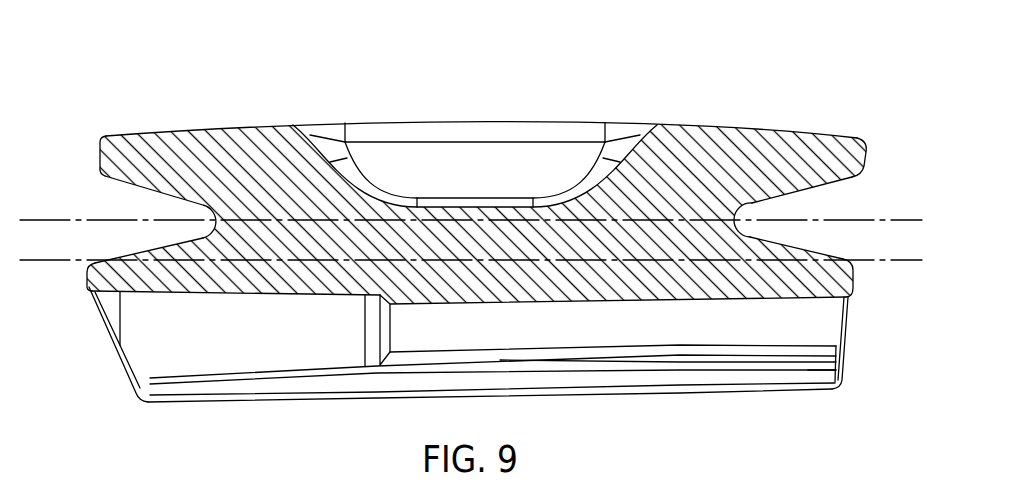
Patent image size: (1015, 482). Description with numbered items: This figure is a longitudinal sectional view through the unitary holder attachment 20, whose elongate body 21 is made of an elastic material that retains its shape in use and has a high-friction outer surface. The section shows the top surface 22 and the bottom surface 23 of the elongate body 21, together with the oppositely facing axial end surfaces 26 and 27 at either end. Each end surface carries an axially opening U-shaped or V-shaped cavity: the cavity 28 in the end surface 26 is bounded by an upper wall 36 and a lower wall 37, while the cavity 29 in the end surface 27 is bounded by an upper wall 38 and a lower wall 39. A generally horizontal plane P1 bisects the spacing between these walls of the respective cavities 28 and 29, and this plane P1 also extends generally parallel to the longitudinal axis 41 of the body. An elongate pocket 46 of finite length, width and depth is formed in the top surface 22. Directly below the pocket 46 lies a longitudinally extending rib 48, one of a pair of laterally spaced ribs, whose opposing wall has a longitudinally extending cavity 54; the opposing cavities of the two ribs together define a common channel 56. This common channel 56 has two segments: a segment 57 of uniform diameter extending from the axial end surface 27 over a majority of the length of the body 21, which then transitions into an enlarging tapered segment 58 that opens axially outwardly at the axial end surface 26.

The unitary holder attachment 20 is at (817, 108).
The elongate body 21 is at (741, 126).
The top surface 22 is at (681, 126).
The bottom surface 23 is at (690, 395).
The axial end surface 26 is at (88, 294).
The axial end surface 27 is at (856, 291).
The cavity 28 is at (108, 202).
The cavity 29 is at (812, 204).
The upper wall 36 is at (100, 178).
The lower wall 37 is at (123, 256).
The upper wall 38 is at (820, 192).
The lower wall 39 is at (787, 240).
The longitudinal axis 41 is at (865, 262).
The elongate pocket 46 is at (487, 147).
The rib 48 is at (808, 370).
The cavity 54 is at (827, 323).
The common channel 56 is at (713, 327).
The segment 57 is at (503, 330).
The enlarging tapered segment 58 is at (170, 346).
The horizontal plane P1 is at (865, 220).